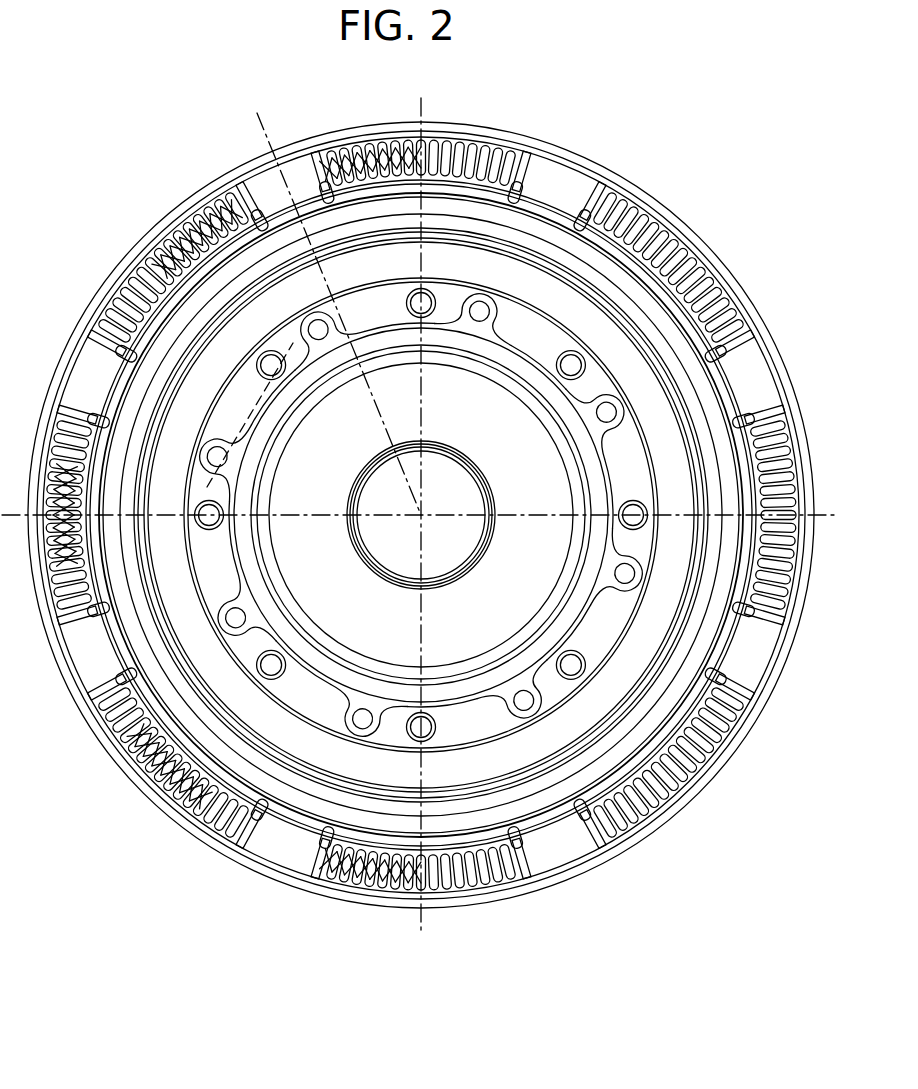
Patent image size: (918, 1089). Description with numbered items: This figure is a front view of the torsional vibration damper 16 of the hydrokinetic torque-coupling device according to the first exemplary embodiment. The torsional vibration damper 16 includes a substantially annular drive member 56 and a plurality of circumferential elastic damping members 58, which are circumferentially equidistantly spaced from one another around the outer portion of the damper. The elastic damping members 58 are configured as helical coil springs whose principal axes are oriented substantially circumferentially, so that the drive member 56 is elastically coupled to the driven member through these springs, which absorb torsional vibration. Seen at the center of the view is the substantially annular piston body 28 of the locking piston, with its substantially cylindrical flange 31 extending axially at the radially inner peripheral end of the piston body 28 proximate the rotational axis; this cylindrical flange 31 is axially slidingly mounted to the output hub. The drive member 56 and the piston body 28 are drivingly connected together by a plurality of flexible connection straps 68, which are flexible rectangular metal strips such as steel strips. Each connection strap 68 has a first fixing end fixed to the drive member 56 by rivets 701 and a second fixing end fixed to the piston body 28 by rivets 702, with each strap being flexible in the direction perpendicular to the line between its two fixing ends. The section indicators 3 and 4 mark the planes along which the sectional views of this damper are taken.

The torsional vibration damper 16 is at (588, 149).
The piston body 28 is at (531, 472).
The cylindrical flange 31 is at (478, 463).
The drive member 56 is at (527, 750).
The elastic damping members 58 is at (407, 133).
The connection straps 68 is at (235, 451).
The rivets 701 is at (570, 663).
The rivets 702 is at (523, 687).
The section line 3- 3 is at (259, 113).
The section line 4- 4 is at (295, 340).